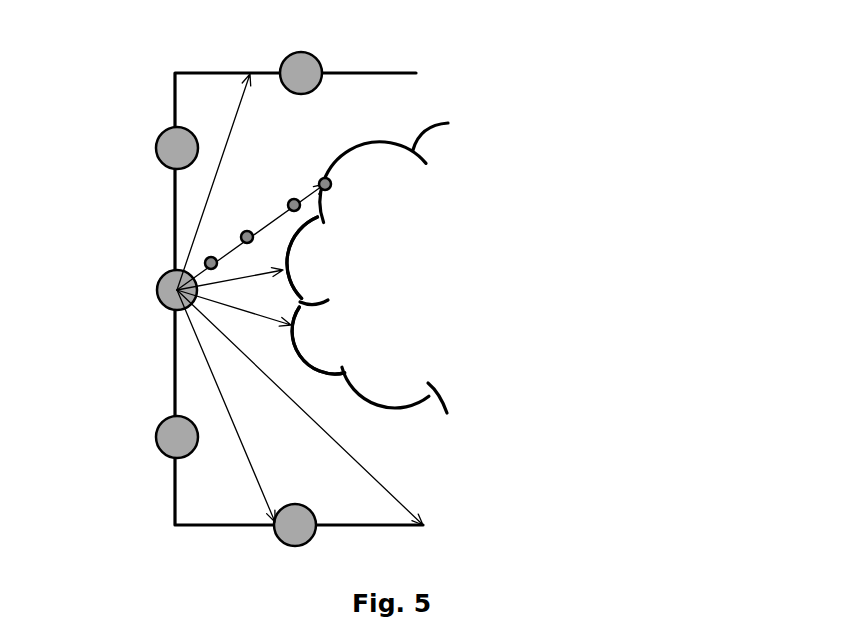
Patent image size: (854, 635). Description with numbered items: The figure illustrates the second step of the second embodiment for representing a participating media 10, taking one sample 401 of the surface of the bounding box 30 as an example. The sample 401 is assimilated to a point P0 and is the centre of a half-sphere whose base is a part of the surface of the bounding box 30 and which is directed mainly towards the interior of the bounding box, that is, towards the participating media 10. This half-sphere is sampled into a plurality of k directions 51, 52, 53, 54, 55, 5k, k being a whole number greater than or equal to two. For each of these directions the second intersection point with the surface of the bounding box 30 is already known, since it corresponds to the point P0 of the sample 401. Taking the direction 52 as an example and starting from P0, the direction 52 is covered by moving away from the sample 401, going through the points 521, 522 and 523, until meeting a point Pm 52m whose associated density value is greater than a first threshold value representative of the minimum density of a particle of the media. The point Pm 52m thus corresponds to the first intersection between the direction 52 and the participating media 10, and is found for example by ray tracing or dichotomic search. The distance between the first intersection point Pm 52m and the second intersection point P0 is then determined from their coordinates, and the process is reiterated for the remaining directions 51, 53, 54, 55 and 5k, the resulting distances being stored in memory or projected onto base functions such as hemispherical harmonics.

The participating media 10 is at (430, 402).
The bounding box 30 is at (396, 73).
The sample 401 is at (158, 288).
The direction 51 is at (233, 122).
The direction 52 is at (304, 225).
The point Pm 52m is at (325, 176).
The point 521 is at (233, 270).
The point 522 is at (249, 224).
The point 523 is at (293, 199).
The direction 53 is at (295, 318).
The direction 54 is at (268, 318).
The direction 55 is at (295, 405).
The direction 5k is at (247, 455).